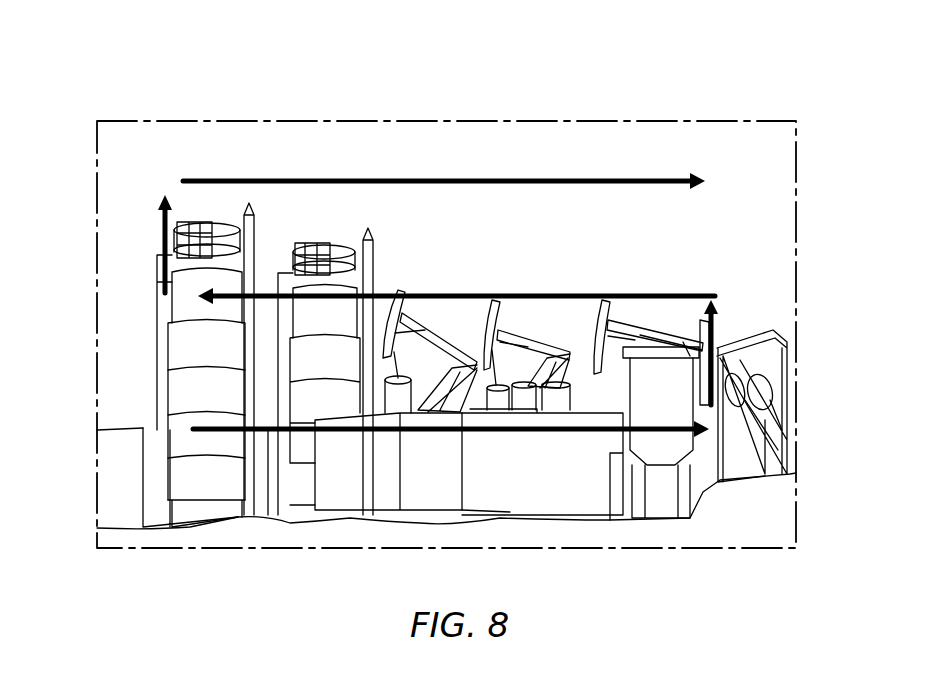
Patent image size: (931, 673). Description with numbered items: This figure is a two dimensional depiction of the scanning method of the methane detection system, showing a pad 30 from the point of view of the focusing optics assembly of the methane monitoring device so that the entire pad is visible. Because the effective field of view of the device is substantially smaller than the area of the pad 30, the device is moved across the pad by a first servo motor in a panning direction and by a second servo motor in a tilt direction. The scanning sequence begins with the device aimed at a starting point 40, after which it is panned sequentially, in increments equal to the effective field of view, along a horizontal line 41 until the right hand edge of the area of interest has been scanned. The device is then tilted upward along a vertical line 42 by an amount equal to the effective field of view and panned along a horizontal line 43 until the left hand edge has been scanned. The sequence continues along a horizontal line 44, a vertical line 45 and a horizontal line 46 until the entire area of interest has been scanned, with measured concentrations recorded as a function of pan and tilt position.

The pad 30 is at (99, 100).
The starting point 40 is at (197, 433).
The horizontal line 41 is at (487, 432).
The vertical line 42 is at (707, 450).
The horizontal line 43 is at (722, 350).
The horizontal line 44 is at (647, 294).
The vertical line 45 is at (162, 230).
The horizontal line 46 is at (544, 183).